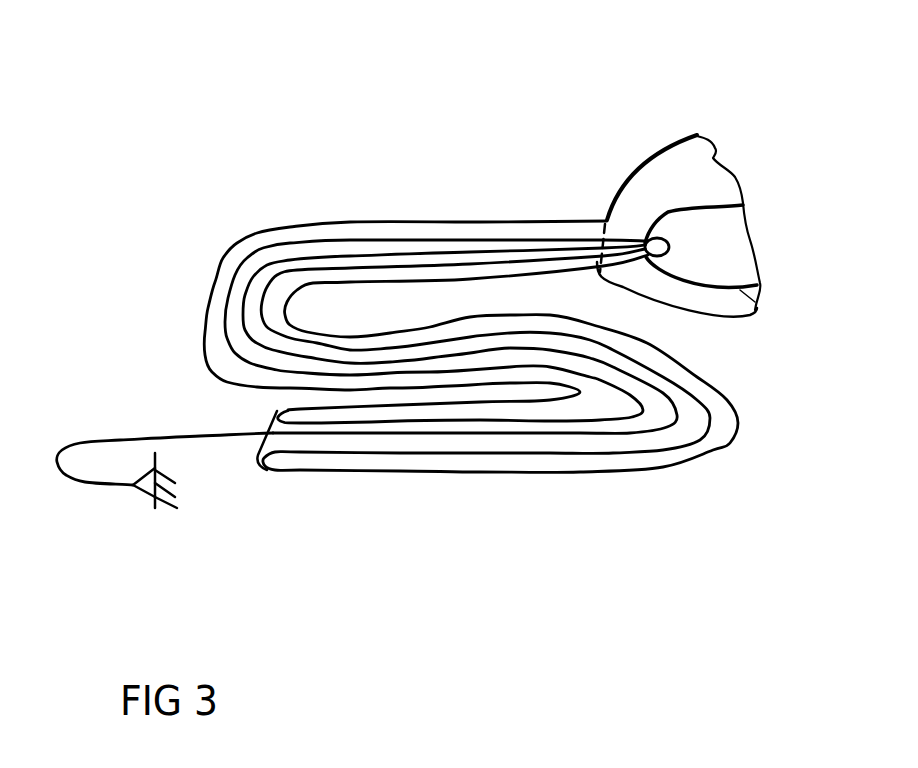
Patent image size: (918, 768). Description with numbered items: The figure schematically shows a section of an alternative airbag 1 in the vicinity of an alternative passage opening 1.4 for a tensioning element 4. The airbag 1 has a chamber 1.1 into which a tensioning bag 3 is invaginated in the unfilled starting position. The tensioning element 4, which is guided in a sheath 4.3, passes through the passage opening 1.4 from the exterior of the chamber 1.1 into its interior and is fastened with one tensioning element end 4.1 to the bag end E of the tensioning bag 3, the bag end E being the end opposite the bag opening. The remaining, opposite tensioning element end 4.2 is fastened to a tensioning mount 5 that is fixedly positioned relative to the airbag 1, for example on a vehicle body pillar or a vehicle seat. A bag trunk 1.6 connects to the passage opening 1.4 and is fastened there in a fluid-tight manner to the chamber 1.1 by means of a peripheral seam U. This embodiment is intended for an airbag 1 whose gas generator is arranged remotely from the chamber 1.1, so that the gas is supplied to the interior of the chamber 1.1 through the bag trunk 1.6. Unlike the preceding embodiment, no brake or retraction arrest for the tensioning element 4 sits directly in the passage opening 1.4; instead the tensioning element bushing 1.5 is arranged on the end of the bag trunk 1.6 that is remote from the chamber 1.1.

The airbag 1 is at (757, 190).
The chamber 1.1 is at (697, 135).
The passage opening 1.4 is at (605, 220).
The tensioning element bushing 1.5 is at (272, 457).
The bag trunk 1.6 is at (360, 221).
The tensioning bag 3 is at (757, 310).
The tensioning element 4 is at (242, 316).
The tensioning element end 4.1 is at (669, 247).
The tensioning element end 4.2 is at (133, 487).
The sheath 4.3 is at (248, 271).
The tensioning mount 5 is at (157, 510).
The bag end E is at (662, 213).
The peripheral seam U is at (603, 222).